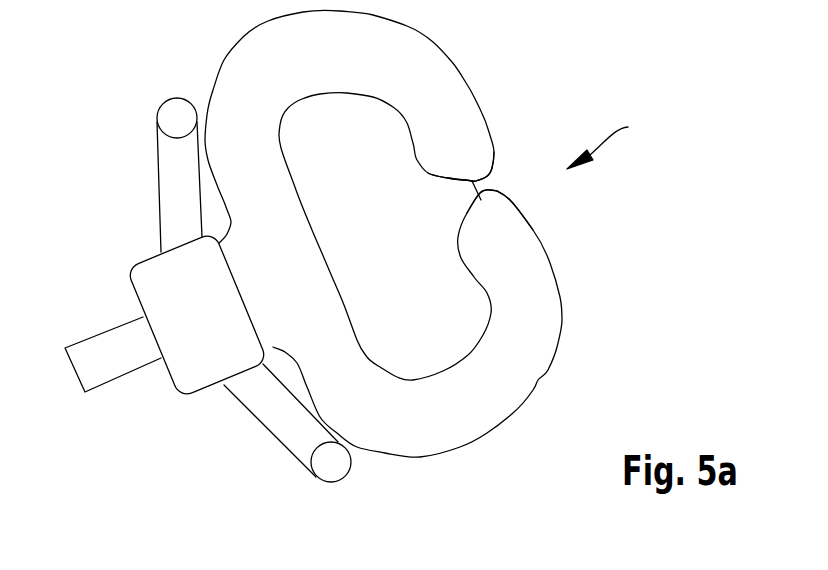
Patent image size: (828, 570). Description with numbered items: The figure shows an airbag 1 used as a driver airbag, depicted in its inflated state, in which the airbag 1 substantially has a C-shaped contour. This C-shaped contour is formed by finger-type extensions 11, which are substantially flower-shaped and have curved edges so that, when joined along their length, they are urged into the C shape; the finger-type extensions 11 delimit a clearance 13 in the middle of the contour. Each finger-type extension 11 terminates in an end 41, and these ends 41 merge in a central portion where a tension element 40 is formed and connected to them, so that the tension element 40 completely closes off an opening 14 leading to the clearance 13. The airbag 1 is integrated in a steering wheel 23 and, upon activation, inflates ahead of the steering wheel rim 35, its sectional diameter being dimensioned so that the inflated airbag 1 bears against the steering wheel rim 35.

The airbag 1 is at (413, 233).
The finger-type extensions 11 is at (435, 60).
The clearance 13 is at (386, 243).
The opening 14 is at (612, 141).
The steering wheel 23 is at (150, 293).
The steering wheel rim 35 is at (170, 173).
The tension element 40 is at (478, 190).
The ends 41 is at (472, 148).